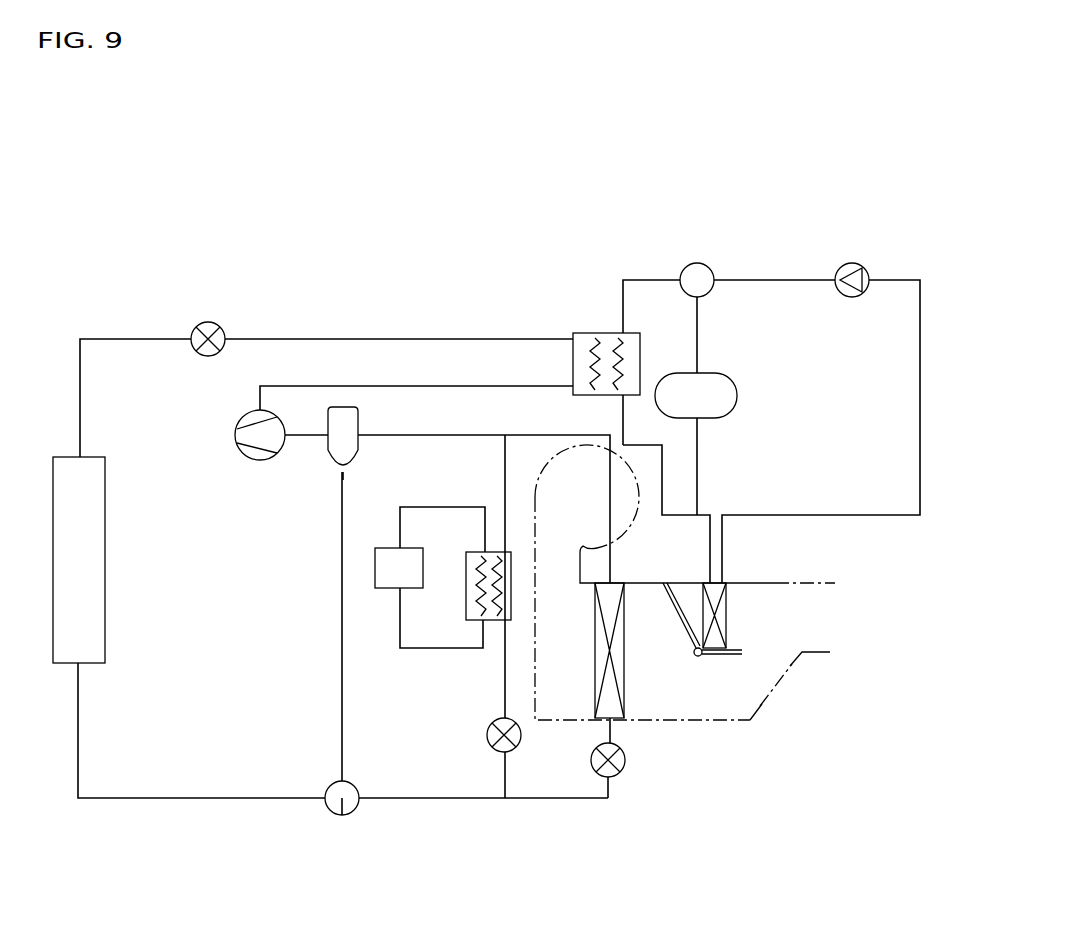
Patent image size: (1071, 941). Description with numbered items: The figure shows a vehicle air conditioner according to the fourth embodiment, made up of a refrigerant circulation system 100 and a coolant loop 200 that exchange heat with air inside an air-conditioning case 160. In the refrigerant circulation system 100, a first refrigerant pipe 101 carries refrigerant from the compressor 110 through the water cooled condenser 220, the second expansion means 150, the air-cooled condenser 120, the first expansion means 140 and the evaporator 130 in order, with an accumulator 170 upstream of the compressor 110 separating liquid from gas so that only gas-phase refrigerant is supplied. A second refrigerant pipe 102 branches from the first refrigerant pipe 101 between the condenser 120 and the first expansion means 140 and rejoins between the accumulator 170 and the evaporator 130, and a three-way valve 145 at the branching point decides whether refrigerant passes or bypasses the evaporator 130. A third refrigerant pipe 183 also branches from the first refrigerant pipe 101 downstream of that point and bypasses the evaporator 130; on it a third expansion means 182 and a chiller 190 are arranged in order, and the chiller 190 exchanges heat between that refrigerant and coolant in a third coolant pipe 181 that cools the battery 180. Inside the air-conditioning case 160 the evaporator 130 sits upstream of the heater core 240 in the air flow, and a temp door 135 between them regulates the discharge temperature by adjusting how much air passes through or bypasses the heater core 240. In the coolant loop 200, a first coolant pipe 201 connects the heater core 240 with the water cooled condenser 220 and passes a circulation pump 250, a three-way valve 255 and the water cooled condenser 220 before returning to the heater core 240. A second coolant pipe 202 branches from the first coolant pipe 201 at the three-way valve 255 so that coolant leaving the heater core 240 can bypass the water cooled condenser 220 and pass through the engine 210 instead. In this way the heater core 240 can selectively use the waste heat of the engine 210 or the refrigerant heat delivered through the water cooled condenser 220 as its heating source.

The refrigerant circulation system 100 is at (331, 298).
The first refrigerant pipe 101 is at (237, 800).
The second refrigerant pipe 102 is at (342, 695).
The compressor 110 is at (258, 460).
The condenser 120 is at (105, 560).
The evaporator 130 is at (613, 705).
The temp door 135 is at (687, 603).
The first expansion means 140 is at (612, 782).
The three-way valve 145 is at (338, 815).
The second expansion means 150 is at (210, 322).
The air-conditioning case 160 is at (735, 724).
The accumulator 170 is at (356, 464).
The battery 180 is at (383, 592).
The third coolant pipe 181 is at (440, 650).
The third expansion means 182 is at (486, 742).
The third refrigerant pipe 183 is at (505, 775).
The chiller 190 is at (476, 555).
The coolant loop 200 is at (866, 185).
The first coolant pipe 201 is at (634, 278).
The second coolant pipe 202 is at (697, 463).
The engine 210 is at (737, 395).
The water cooled condenser 220 is at (596, 331).
The heater core 240 is at (729, 612).
The circulation pump 250 is at (862, 263).
The three-way valve 255 is at (700, 265).